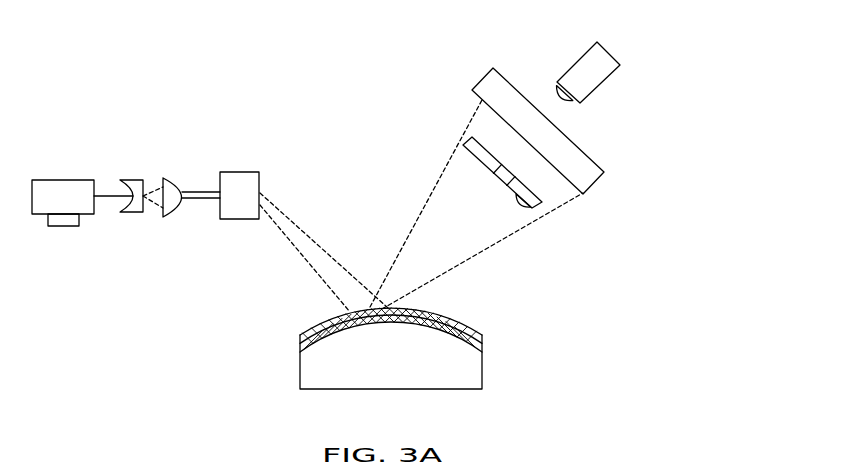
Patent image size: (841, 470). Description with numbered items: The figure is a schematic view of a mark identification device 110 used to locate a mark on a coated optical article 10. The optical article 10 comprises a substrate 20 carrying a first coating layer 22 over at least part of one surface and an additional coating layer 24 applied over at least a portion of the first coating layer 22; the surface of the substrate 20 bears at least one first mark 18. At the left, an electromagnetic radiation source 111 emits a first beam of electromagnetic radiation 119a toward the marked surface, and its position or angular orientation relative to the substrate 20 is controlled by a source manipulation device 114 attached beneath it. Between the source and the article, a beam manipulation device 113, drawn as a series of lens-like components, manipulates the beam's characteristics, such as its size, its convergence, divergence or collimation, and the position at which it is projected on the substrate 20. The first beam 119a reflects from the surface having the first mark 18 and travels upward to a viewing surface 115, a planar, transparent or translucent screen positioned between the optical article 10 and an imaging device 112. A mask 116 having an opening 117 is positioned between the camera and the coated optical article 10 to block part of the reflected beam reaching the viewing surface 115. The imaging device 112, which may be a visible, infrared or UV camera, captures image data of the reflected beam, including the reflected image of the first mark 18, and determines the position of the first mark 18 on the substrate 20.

The mark identification device 110 is at (692, 70).
The electromagnetic radiation source 111 is at (65, 179).
The source manipulation device 114 is at (62, 227).
The beam manipulation device 113 is at (259, 165).
The first beam of electromagnetic radiation 119a is at (307, 236).
The viewing surface 115 is at (597, 167).
The imaging device 112 is at (600, 88).
The opening 117 is at (496, 177).
The mask 116 is at (533, 212).
The optical article 10 is at (395, 321).
The substrate 20 is at (300, 364).
The first mark 18 is at (333, 323).
The additional coating layer 24 is at (476, 332).
The first coating layer 22 is at (482, 355).